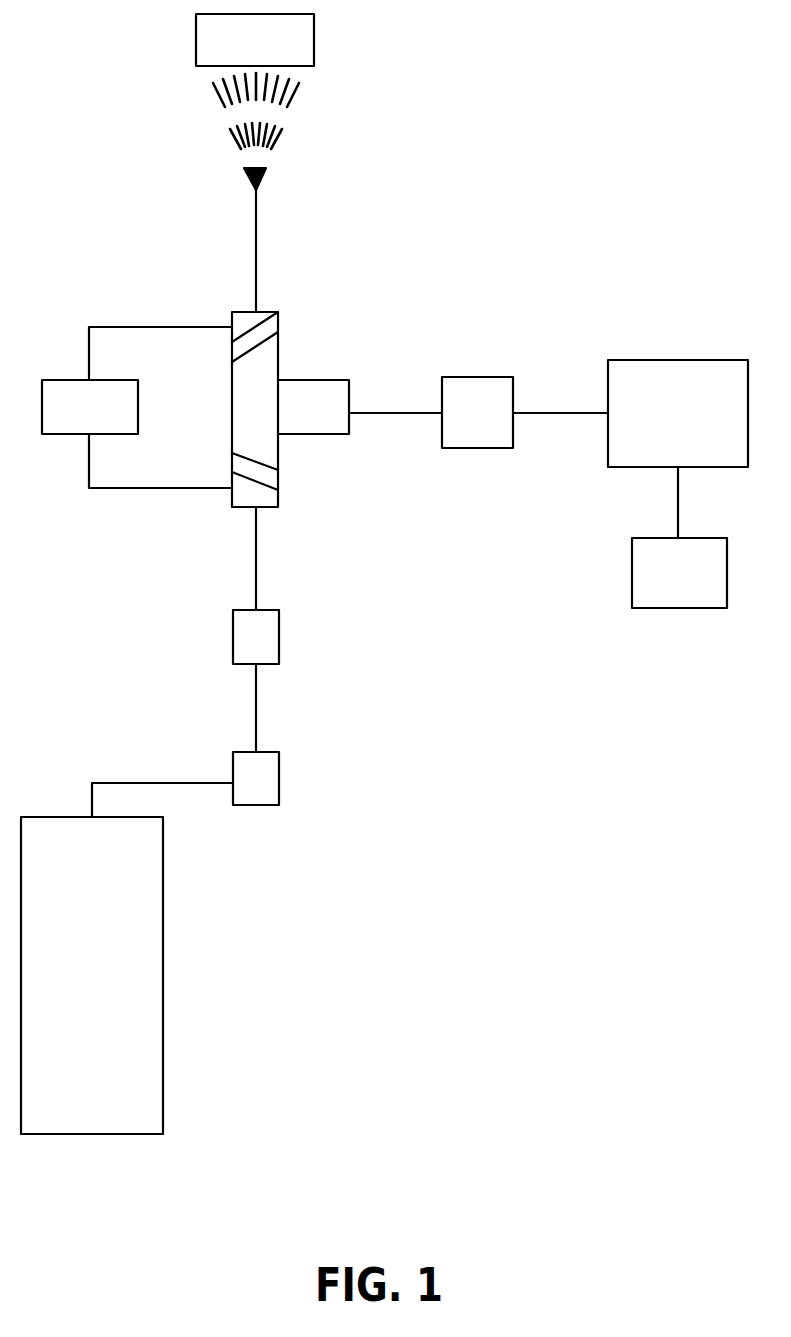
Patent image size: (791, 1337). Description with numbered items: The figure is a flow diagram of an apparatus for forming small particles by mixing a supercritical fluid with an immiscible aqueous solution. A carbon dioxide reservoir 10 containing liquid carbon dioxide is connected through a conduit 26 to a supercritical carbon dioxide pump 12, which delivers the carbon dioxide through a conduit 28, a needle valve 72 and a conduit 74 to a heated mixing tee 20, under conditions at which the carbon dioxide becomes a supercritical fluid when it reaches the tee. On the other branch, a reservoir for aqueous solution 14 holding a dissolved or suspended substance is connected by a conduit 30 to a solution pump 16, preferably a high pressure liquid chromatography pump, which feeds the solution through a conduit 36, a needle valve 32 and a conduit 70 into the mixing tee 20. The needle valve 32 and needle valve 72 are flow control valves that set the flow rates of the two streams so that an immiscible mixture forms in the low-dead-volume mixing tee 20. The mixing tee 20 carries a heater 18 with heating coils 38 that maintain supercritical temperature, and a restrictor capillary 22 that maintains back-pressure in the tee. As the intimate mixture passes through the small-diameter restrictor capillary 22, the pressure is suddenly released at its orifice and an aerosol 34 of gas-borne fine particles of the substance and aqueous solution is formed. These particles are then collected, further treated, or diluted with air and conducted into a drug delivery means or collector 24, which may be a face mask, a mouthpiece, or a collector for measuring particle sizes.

The carbon dioxide reservoir 10 is at (164, 997).
The supercritical carbon dioxide pump 12 is at (282, 778).
The reservoir for aqueous solution 14 is at (677, 610).
The solution pump 16 is at (677, 360).
The heater 18 is at (53, 380).
The mixing tee 20 is at (280, 325).
The restrictor capillary 22 is at (256, 243).
The drug delivery means or collector 24 is at (314, 44).
The conduit 26 is at (198, 785).
The conduit 28 is at (258, 710).
The conduit 30 is at (678, 513).
The needle valve 32 is at (480, 448).
The aerosol 34 is at (300, 97).
The conduit 36 is at (550, 413).
The heating coils 38 is at (255, 332).
The conduit 70 is at (398, 413).
The needle valve 72 is at (282, 637).
The conduit 74 is at (257, 563).